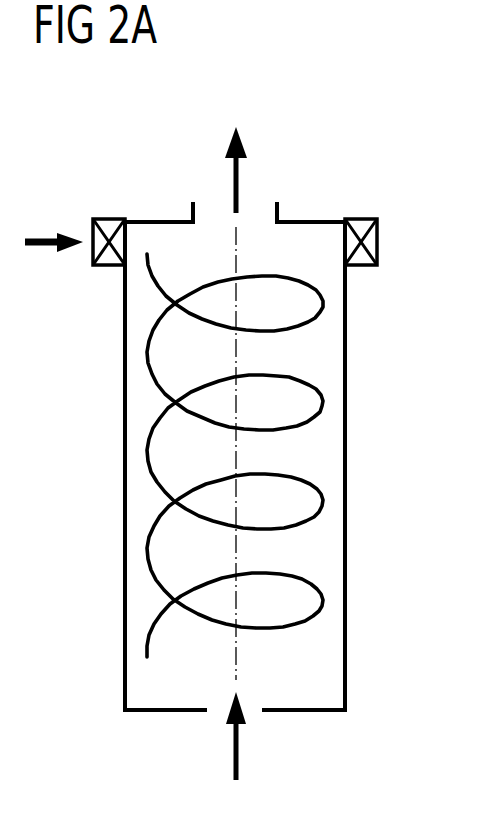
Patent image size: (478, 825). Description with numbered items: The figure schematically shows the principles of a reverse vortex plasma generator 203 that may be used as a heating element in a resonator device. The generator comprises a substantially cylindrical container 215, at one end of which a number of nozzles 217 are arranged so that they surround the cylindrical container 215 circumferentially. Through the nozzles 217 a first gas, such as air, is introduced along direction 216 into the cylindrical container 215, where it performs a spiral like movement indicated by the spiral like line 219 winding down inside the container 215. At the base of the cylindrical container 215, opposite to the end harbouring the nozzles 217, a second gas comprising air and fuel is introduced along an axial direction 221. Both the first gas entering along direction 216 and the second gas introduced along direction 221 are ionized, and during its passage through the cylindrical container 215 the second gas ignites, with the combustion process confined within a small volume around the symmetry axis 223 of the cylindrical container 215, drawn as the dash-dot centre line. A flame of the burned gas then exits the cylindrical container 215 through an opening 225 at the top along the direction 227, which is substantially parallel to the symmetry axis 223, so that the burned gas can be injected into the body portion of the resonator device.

The reverse vortex plasma generator 203 is at (338, 129).
The cylindrical container 215 is at (347, 488).
The direction 216 is at (42, 238).
The nozzles 217 is at (108, 226).
The spiral like line 219 is at (322, 402).
The axial direction 221 is at (238, 748).
The symmetry axis 223 is at (237, 345).
The opening 225 is at (195, 202).
The direction 227 is at (239, 183).